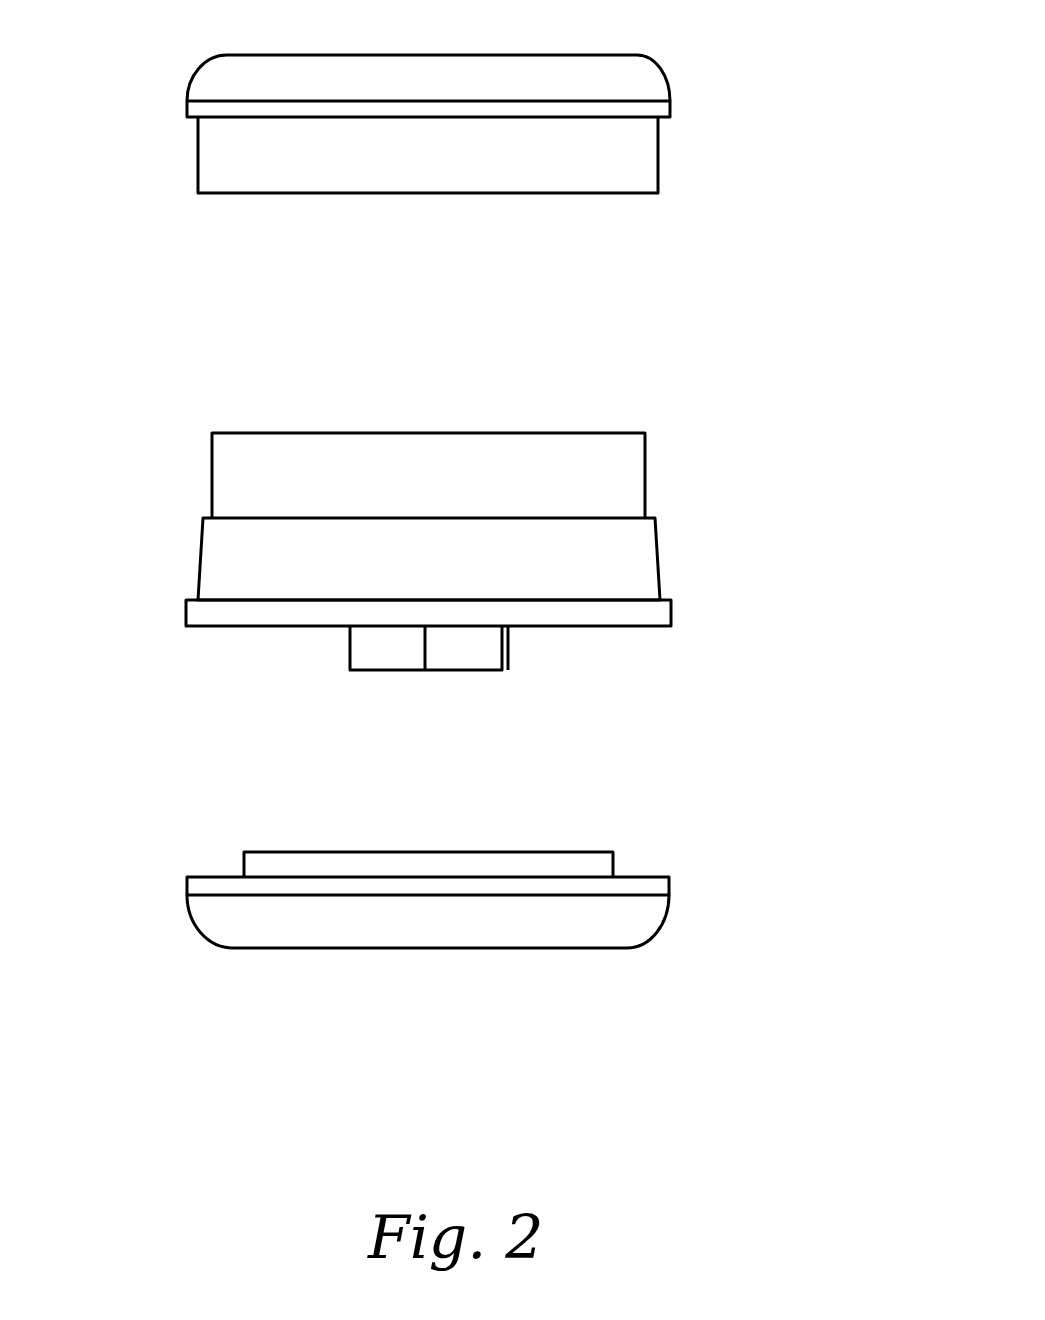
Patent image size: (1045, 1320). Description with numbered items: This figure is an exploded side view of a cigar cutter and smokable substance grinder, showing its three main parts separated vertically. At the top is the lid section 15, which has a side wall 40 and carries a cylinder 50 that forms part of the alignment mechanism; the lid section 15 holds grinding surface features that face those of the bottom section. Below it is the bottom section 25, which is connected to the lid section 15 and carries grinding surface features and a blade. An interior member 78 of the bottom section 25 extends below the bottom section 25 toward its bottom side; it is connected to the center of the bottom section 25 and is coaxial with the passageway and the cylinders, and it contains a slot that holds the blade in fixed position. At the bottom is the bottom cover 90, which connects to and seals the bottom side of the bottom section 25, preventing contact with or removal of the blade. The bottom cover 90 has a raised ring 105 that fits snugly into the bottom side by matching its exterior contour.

The lid section 15 is at (653, 63).
The side wall 40 is at (503, 191).
The cylinder 50 is at (643, 185).
The bottom section 25 is at (647, 567).
The interior member 78 is at (485, 672).
The bottom cover 90 is at (663, 900).
The raised ring 105 is at (205, 893).